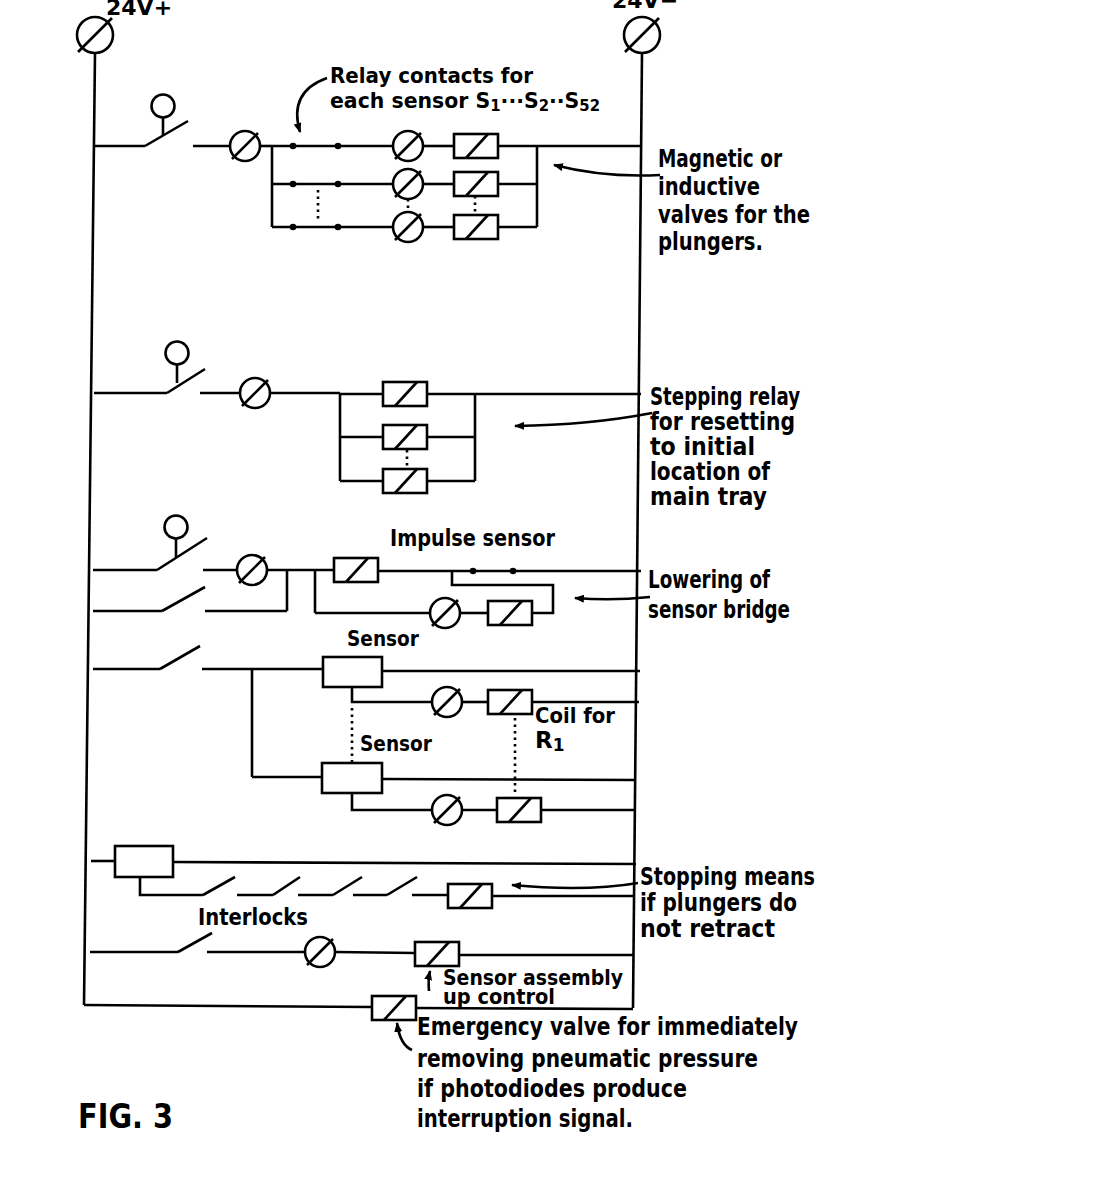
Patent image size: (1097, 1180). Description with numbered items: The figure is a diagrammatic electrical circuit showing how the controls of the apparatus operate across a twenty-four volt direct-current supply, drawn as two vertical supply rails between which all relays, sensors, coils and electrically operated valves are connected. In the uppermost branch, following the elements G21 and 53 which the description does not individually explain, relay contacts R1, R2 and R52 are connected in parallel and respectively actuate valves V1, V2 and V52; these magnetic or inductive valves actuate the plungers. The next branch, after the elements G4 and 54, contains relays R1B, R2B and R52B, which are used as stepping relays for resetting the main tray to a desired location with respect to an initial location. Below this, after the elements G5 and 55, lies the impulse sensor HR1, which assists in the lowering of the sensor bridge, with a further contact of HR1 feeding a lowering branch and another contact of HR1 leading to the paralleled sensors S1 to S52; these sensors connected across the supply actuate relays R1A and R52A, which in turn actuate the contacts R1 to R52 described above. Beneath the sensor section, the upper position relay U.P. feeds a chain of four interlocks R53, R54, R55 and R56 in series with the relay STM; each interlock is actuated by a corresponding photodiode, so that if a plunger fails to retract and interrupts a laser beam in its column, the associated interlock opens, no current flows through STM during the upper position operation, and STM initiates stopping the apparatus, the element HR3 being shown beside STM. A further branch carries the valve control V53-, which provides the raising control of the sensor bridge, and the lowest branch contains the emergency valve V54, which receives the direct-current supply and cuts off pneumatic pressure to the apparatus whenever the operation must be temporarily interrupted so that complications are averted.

The signal lamp 53 is at (232, 135).
The signal lamp 54 is at (270, 375).
The signal lamp 55 is at (268, 556).
The push-button switch G21 is at (141, 116).
The push-button switch G4 is at (149, 356).
The push-button switch G5 is at (150, 534).
The relay contact R1 is at (332, 131).
The relay contact R2 is at (332, 170).
The relay contact R52 is at (332, 213).
The valve V1 is at (517, 138).
The valve V2 is at (465, 178).
The valve V52 is at (466, 221).
The stepping relay R1B is at (490, 382).
The stepping relay R2B is at (407, 430).
The stepping relay R52B is at (408, 474).
The impulse sensor HR1 is at (367, 598).
The sensor S1 is at (473, 656).
The sensor S52 is at (444, 761).
The relay R1A is at (495, 696).
The relay R52A is at (494, 804).
The upper position relay U.P. is at (363, 861).
The interlock R53 is at (226, 882).
The interlock R54 is at (292, 882).
The interlock R55 is at (347, 882).
The interlock R56 is at (406, 882).
The relay STM is at (541, 884).
The relay HR3 is at (521, 913).
The sensor bridge raising control V53- is at (484, 945).
The emergency valve V54 is at (358, 993).